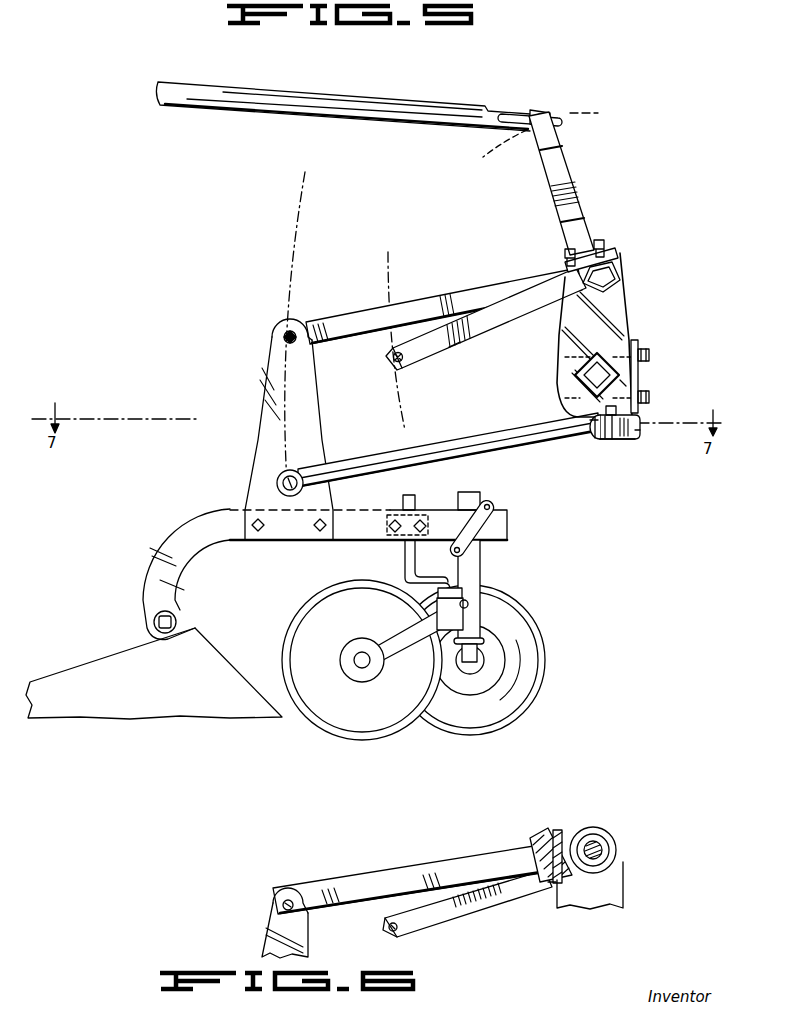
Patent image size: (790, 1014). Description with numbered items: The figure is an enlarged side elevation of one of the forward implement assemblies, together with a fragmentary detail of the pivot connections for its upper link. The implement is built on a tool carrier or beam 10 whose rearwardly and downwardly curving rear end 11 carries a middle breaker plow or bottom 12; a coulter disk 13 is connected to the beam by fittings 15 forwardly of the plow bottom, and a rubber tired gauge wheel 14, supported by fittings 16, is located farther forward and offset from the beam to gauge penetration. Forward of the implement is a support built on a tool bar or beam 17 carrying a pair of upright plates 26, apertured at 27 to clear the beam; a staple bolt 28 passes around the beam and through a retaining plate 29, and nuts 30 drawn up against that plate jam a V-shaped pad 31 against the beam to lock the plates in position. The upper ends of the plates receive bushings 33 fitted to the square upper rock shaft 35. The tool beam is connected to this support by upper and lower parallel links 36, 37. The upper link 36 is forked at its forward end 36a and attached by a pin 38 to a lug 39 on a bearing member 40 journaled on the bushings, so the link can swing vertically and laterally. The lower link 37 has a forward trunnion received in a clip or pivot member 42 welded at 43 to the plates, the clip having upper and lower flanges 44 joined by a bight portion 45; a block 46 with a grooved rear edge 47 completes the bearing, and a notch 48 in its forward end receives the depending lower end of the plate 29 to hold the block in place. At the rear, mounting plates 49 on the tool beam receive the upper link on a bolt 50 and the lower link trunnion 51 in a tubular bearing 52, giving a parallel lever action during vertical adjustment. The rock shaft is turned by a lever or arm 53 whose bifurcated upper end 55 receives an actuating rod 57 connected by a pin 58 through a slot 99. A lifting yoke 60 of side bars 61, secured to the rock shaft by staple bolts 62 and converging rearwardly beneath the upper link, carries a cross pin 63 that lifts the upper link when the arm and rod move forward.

In FIG. 5, the tool carrier or beam 10 is at (180, 532).
In FIG. 5, the rearwardly and downwardly curving rear end 11 is at (147, 613).
In FIG. 5, the middle breaker plow or bottom 12 is at (214, 669).
In FIG. 5, the coulter disk 13 is at (304, 608).
In FIG. 5, the rubber tired gauge wheel 14 is at (530, 620).
In FIG. 5, the fittings 15 is at (445, 578).
In FIG. 5, the fittings 16 is at (489, 519).
In FIG. 5, the tool bar or beam 17 is at (577, 382).
In FIG. 5, the upright plates 26 is at (612, 307).
In FIG. 6, the upright plates 26 is at (613, 886).
In FIG. 5, the apertures 27 is at (603, 357).
In FIG. 5, the staple bolt 28 is at (575, 367).
In FIG. 5, the retaining plate 29 is at (638, 373).
In FIG. 5, the nuts 30 is at (650, 355).
In FIG. 5, the V-shaped pad 31 is at (627, 383).
In FIG. 6, the bushings 33 is at (596, 831).
In FIG. 5, the upper rock shaft 35 is at (619, 256).
In FIG. 6, the upper rock shaft 35 is at (603, 852).
In FIG. 5, the upper link 36 is at (371, 310).
In FIG. 6, the upper link 36 is at (389, 877).
In FIG. 6, the forked forward end 36a is at (543, 830).
In FIG. 5, the lower link 37 is at (386, 453).
In FIG. 6, the pin 38 is at (559, 829).
In FIG. 6, the lug 39 is at (552, 884).
In FIG. 6, the bearing member 40 is at (610, 834).
In FIG. 5, the clip or pivot member 42 is at (624, 443).
In FIG. 5, the weld 43 is at (603, 410).
In FIG. 5, the upper and lower flanges 44 is at (609, 440).
In FIG. 5, the curved back or bight portion 45 is at (590, 426).
In FIG. 5, the block or bearing member 46 is at (638, 419).
In FIG. 5, the grooved rear edge 47 is at (594, 437).
In FIG. 5, the notch 48 is at (641, 430).
In FIG. 5, the mounting plates 49 is at (311, 409).
In FIG. 6, the mounting plates 49 is at (297, 933).
In FIG. 5, the bolt 50 is at (296, 325).
In FIG. 6, the bolt 50 is at (284, 899).
In FIG. 5, the trunnion portion or member 51 is at (273, 483).
In FIG. 5, the tubular bearing 52 is at (278, 473).
In FIG. 5, the lever or arm 53 is at (583, 186).
In FIG. 5, the bifurcated upper end 55 is at (563, 147).
In FIG. 5, the actuating rod 57 is at (278, 95).
In FIG. 5, the pin 58 is at (546, 112).
In FIG. 5, the pick-up or lifting yoke 60 is at (452, 352).
In FIG. 5, the side bars 61 is at (491, 319).
In FIG. 6, the side bars 61 is at (469, 894).
In FIG. 5, the staple bolts 62 is at (616, 280).
In FIG. 5, the cross pin 63 is at (392, 365).
In FIG. 6, the cross pin 63 is at (389, 932).
In FIG. 5, the slot 99 is at (507, 113).